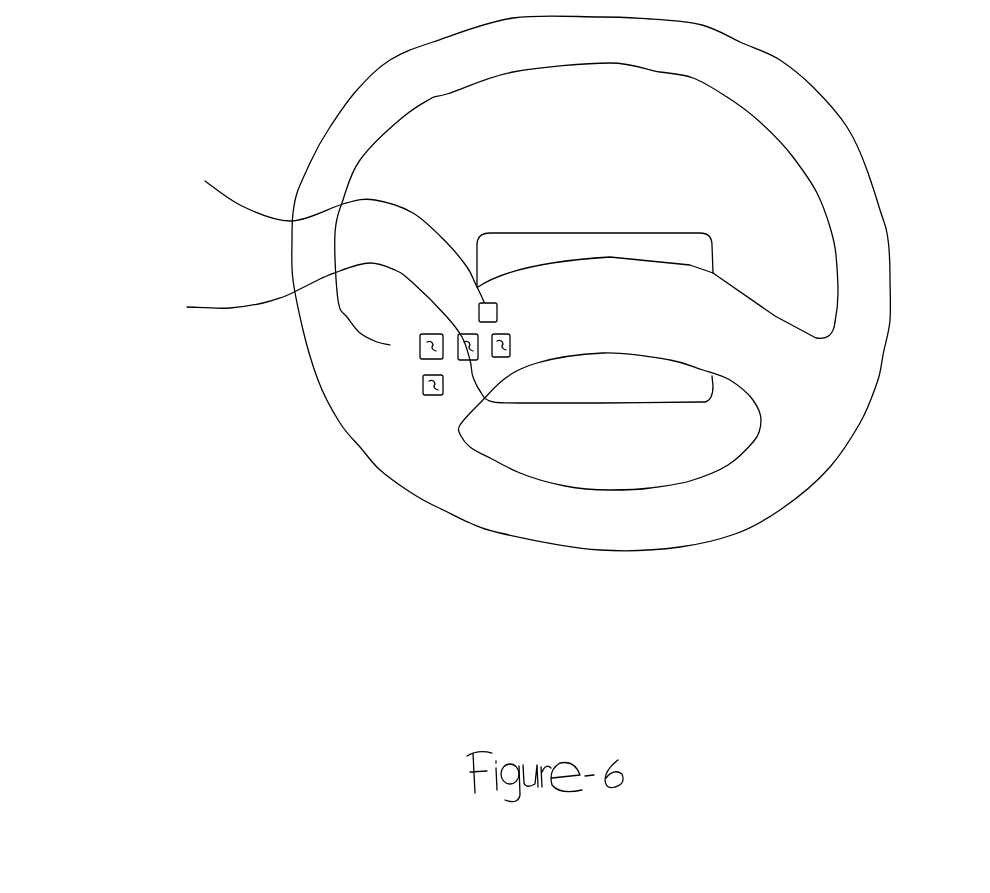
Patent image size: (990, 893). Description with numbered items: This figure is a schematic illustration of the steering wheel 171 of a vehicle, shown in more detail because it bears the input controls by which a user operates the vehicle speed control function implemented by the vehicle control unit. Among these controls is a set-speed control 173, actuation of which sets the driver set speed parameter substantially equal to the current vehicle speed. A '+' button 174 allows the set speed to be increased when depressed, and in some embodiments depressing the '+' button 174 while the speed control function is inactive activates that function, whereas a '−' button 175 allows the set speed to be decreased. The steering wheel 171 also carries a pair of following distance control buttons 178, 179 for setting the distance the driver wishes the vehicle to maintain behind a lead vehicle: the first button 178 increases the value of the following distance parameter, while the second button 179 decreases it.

The steering wheel 171 is at (870, 219).
The set-speed control 173 is at (131, 309).
The '+' button 174 is at (420, 347).
The '−' button 175 is at (423, 388).
The following distance control button 178 is at (160, 148).
The following distance control button 179 is at (460, 425).